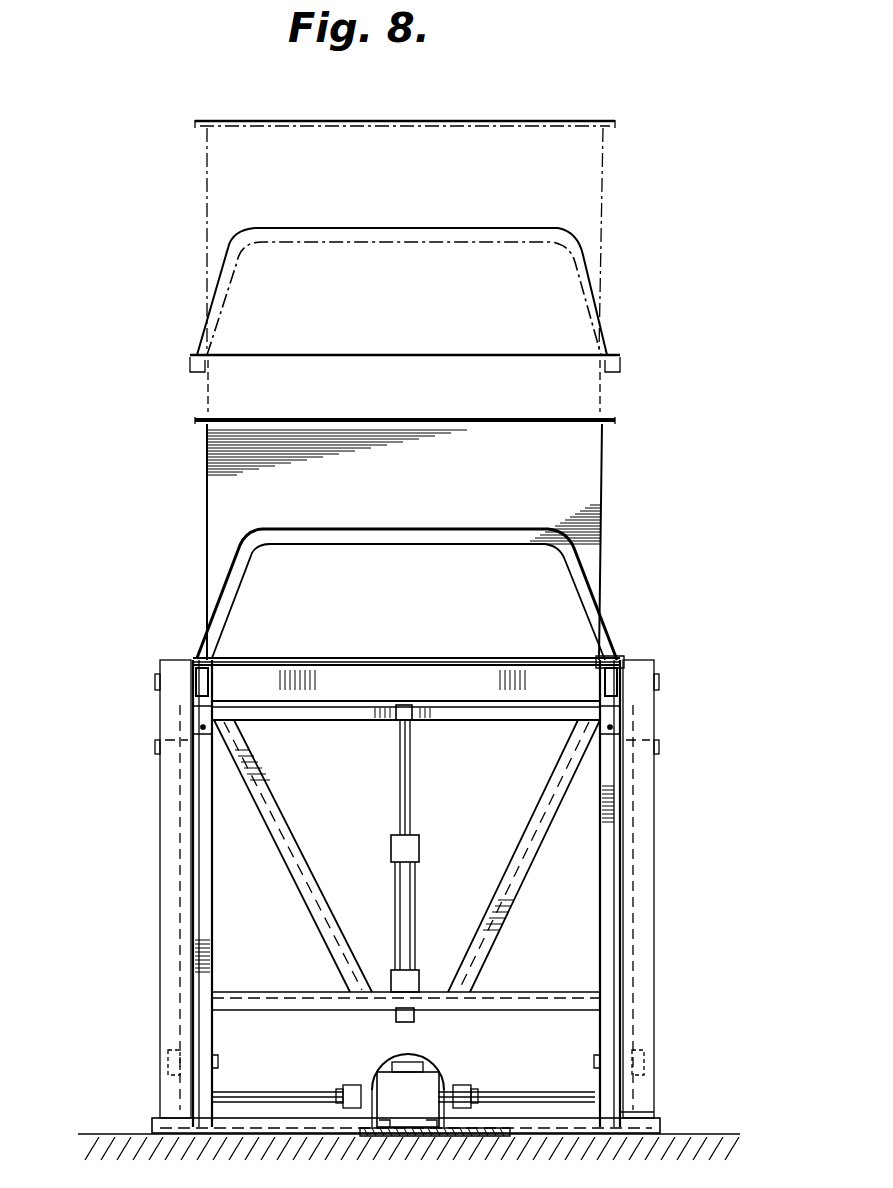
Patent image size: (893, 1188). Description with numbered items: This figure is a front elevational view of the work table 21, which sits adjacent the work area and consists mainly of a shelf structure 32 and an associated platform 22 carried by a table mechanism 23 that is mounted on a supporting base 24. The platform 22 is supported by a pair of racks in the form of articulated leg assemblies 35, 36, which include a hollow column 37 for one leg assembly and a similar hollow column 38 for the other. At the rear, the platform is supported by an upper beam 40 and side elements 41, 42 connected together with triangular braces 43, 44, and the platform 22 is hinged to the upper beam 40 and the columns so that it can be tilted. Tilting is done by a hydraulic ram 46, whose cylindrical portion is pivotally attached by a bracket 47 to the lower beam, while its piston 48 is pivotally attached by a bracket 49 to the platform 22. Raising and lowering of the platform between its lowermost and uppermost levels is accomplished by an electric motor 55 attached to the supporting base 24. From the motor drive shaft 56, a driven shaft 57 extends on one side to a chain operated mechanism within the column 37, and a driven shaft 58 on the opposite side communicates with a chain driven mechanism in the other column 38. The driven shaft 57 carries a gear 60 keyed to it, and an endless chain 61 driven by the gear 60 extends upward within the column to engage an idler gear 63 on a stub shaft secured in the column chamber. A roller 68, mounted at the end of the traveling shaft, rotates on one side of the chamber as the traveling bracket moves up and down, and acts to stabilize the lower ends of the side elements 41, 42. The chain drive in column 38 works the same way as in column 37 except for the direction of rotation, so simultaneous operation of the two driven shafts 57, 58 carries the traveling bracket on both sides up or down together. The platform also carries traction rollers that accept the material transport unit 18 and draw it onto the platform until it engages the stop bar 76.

The material transport unit 18 is at (225, 178).
The stop bar 76 is at (525, 240).
The work table 21 is at (618, 655).
The platform 22 is at (265, 680).
The table mechanism 23 is at (513, 1057).
The supporting base 24 is at (150, 1120).
The shelf structure 32 is at (520, 690).
The articulated leg assembly 35 is at (654, 886).
The articulated leg assembly 36 is at (160, 792).
The hollow column 37 is at (654, 950).
The hollow column 38 is at (160, 940).
The upper beam 40 is at (330, 715).
The side element 41 is at (618, 816).
The side element 42 is at (200, 932).
The triangular brace 43 is at (520, 890).
The triangular brace 44 is at (270, 797).
The hydraulic ram 46 is at (415, 892).
The bracket 47 is at (415, 1002).
The piston 48 is at (410, 782).
The bracket 49 is at (420, 710).
The electric motor 55 is at (375, 1065).
The motor drive shaft 56 is at (400, 1130).
The driven shaft 57 is at (555, 1102).
The driven shaft 58 is at (245, 1098).
The gear 60 is at (640, 1116).
The endless chain 61 is at (640, 772).
The idler gear 63 is at (195, 735).
The roller 68 is at (175, 1060).